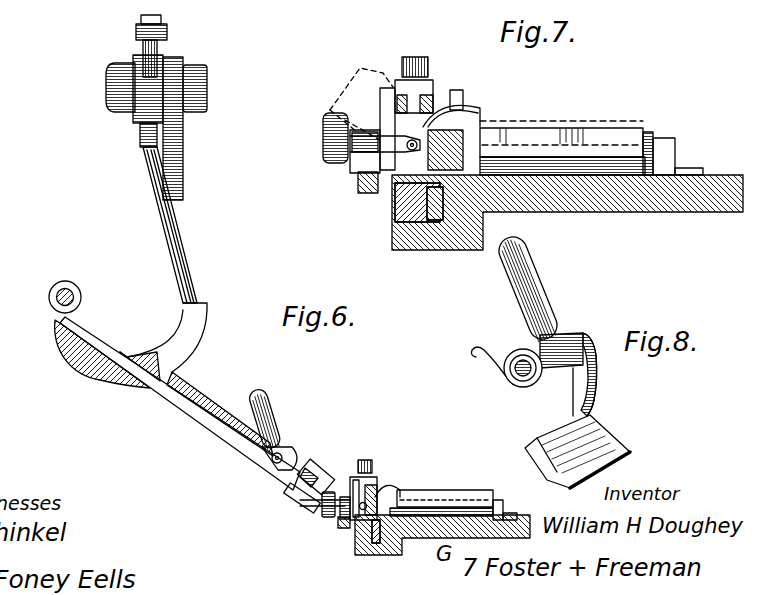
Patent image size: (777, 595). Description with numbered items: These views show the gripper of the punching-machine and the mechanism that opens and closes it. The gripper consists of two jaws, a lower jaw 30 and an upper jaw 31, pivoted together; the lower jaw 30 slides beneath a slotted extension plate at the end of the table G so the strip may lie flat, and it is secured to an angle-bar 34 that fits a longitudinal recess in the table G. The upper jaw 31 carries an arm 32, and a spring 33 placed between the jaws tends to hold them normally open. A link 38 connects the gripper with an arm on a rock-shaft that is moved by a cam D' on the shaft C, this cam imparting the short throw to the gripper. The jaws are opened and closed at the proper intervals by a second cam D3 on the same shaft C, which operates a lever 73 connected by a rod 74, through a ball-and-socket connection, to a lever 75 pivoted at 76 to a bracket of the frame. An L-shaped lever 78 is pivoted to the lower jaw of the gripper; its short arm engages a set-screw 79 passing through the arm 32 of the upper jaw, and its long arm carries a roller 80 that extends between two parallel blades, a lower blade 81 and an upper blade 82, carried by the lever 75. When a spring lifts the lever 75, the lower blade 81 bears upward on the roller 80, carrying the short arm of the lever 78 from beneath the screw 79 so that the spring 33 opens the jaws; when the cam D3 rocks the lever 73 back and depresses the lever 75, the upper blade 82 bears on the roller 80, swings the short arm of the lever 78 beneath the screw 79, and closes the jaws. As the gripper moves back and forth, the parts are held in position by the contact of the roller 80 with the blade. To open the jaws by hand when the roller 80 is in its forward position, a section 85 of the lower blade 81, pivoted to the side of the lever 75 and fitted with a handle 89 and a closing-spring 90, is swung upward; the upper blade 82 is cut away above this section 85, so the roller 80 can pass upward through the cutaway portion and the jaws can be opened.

In FIG. 6, the lever 73 is at (143, 48).
In FIG. 6, the shaft C is at (108, 93).
In FIG. 6, the cam D' is at (173, 127).
In FIG. 6, the cam D3 is at (143, 152).
In FIG. 6, the rod 74 is at (167, 225).
In FIG. 6, the pivot 76 is at (52, 298).
In FIG. 6, the lever 75 is at (177, 396).
In FIG. 6, the handle 89 is at (272, 419).
In FIG. 8, the handle 89 is at (538, 292).
In FIG. 6, the upper blade 82 is at (330, 474).
In FIG. 6, the lower blade 81 is at (312, 523).
In FIG. 6, the roller 80 is at (333, 500).
In FIG. 7, the roller 80 is at (325, 143).
In FIG. 6, the L-shaped lever 78 is at (336, 530).
In FIG. 7, the L-shaped lever 78 is at (380, 142).
In FIG. 6, the link 38 is at (345, 530).
In FIG. 7, the link 38 is at (365, 195).
In FIG. 6, the angle-bar 34 is at (378, 548).
In FIG. 7, the angle-bar 34 is at (430, 200).
In FIG. 6, the table G is at (444, 554).
In FIG. 7, the table G is at (650, 200).
In FIG. 6, the lower jaw 30 is at (452, 508).
In FIG. 7, the lower jaw 30 is at (590, 162).
In FIG. 6, the upper jaw 31 is at (412, 500).
In FIG. 7, the upper jaw 31 is at (575, 122).
In FIG. 6, the set-screw 79 is at (372, 461).
In FIG. 7, the set-screw 79 is at (428, 68).
In FIG. 7, the arm 32 is at (393, 83).
In FIG. 7, the spring 33 is at (460, 118).
In FIG. 8, the closing-spring 90 is at (500, 366).
In FIG. 8, the section 85 is at (597, 456).